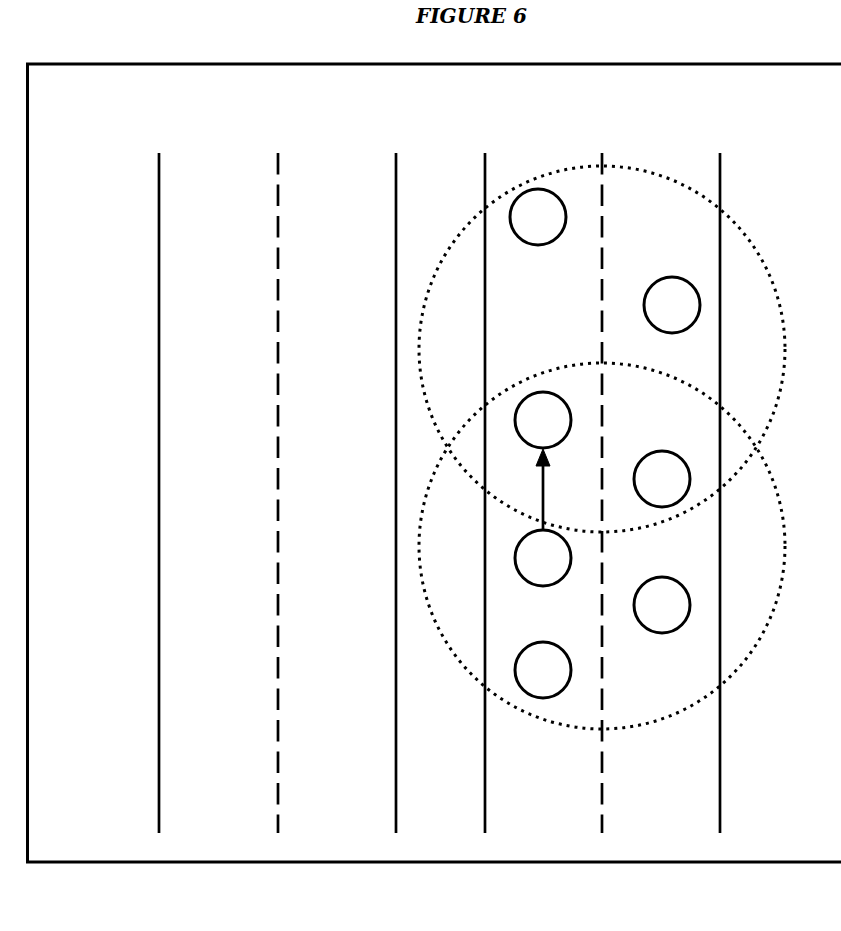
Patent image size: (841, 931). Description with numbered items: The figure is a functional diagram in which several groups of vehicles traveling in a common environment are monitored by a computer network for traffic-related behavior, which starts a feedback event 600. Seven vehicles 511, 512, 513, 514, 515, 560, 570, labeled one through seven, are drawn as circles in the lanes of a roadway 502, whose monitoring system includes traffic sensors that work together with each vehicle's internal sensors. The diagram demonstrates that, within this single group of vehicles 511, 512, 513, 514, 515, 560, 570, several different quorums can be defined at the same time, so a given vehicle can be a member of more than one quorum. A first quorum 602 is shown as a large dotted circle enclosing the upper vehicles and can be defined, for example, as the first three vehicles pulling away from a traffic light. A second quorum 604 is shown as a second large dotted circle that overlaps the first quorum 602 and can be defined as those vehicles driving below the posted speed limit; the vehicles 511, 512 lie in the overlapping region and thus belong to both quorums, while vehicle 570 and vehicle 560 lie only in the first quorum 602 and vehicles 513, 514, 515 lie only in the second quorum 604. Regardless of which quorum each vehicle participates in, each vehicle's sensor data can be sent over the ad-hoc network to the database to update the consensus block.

The feedback event 600 is at (100, 113).
The roadway 502 is at (159, 391).
The first quorum 602 is at (811, 248).
The second quorum 604 is at (829, 493).
The vehicle 511 is at (527, 439).
The vehicle 512 is at (646, 498).
The vehicle 513 is at (527, 577).
The vehicle 514 is at (646, 624).
The vehicle 515 is at (527, 689).
The vehicle 560 is at (656, 324).
The vehicle 570 is at (522, 236).